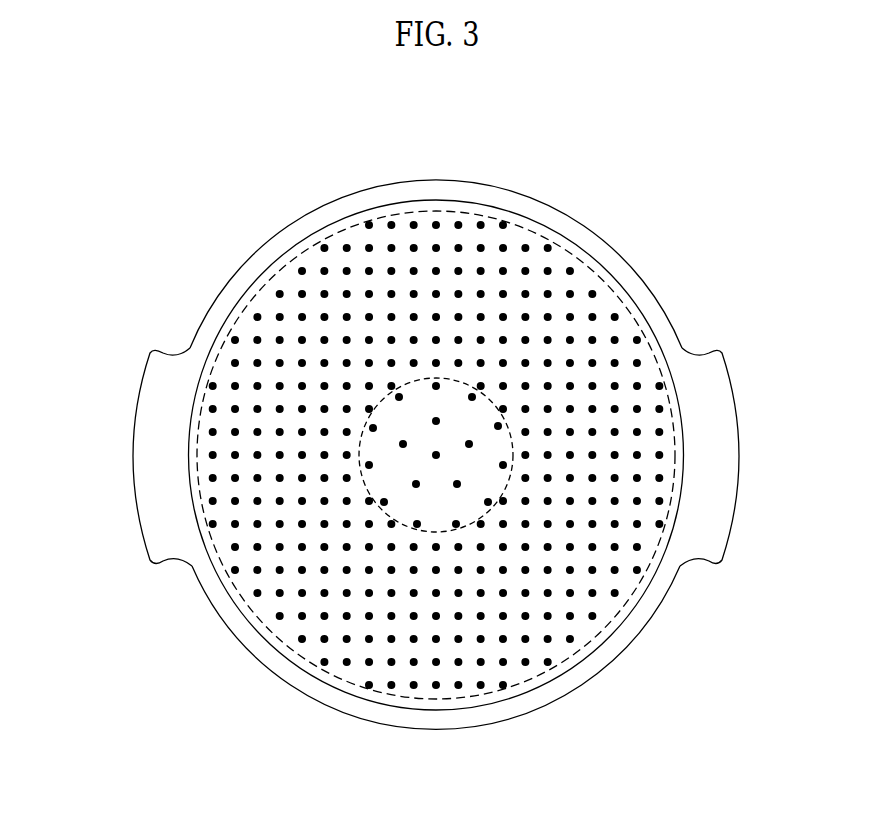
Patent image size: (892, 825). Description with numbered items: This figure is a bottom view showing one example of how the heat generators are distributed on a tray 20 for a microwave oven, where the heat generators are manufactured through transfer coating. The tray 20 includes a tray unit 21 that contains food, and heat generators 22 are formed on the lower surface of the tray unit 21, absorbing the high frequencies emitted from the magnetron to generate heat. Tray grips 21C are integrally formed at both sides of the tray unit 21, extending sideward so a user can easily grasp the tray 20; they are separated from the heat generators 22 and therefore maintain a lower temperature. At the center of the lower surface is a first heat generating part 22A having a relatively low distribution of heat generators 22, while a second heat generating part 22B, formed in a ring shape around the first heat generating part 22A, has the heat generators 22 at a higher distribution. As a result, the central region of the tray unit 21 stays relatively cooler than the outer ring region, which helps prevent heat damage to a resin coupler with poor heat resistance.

The tray for a microwave oven 20 is at (606, 221).
The tray unit 21 is at (340, 207).
The tray grips 21C is at (133, 447).
The heat generators 22 is at (594, 294).
The first heat generating part 22A is at (484, 431).
The second heat generating part 22B is at (590, 442).